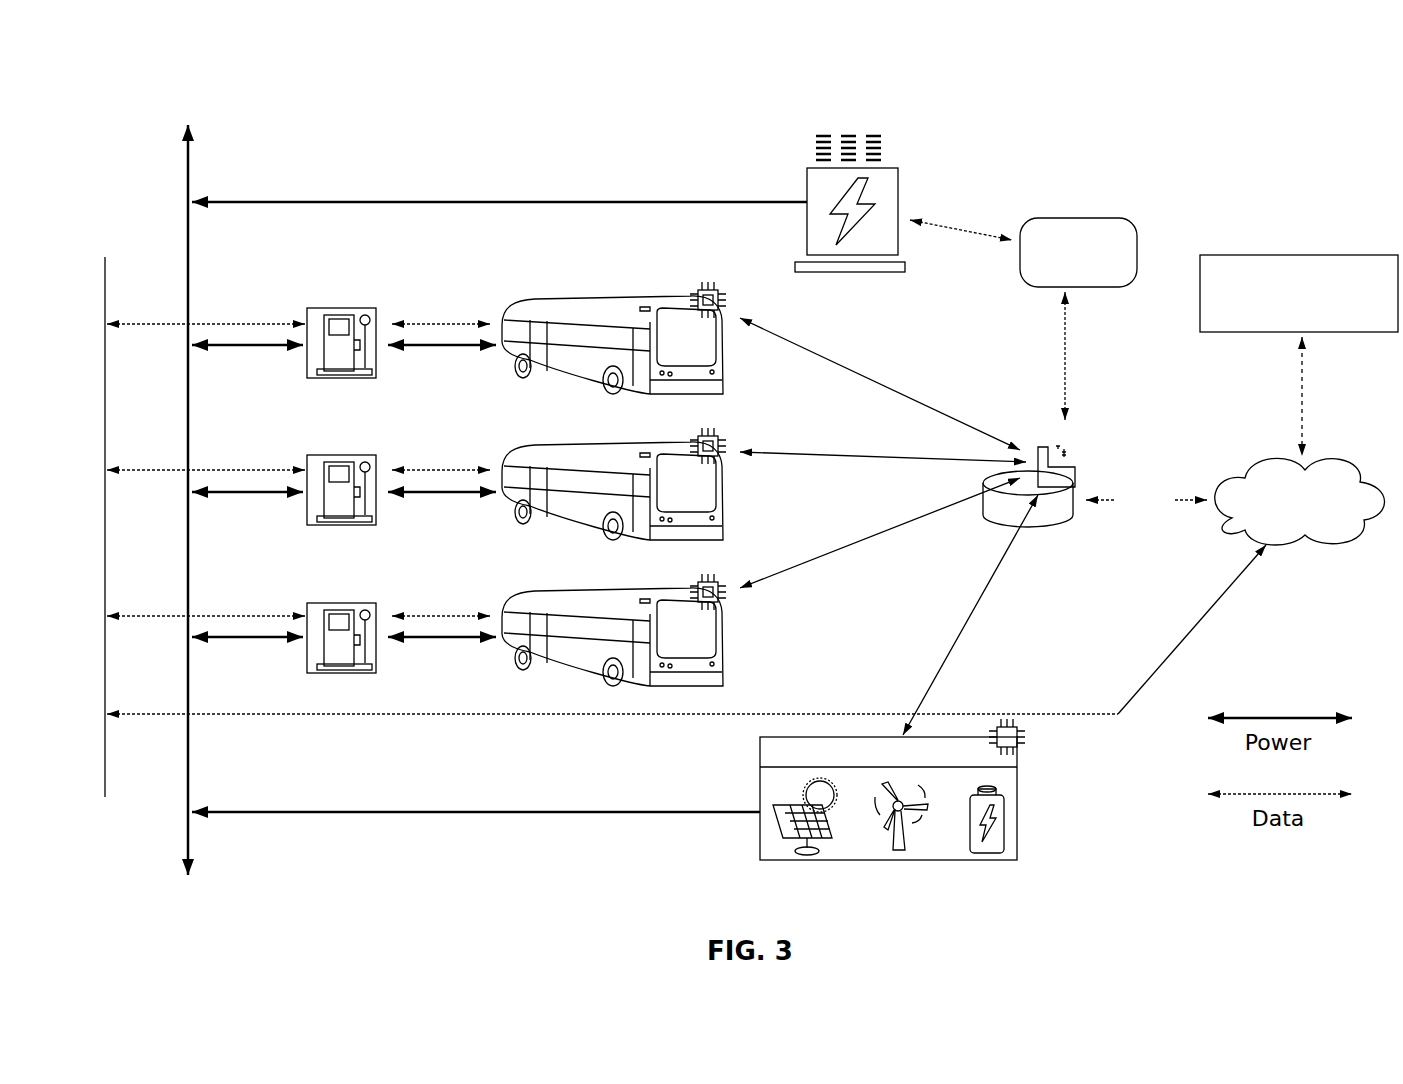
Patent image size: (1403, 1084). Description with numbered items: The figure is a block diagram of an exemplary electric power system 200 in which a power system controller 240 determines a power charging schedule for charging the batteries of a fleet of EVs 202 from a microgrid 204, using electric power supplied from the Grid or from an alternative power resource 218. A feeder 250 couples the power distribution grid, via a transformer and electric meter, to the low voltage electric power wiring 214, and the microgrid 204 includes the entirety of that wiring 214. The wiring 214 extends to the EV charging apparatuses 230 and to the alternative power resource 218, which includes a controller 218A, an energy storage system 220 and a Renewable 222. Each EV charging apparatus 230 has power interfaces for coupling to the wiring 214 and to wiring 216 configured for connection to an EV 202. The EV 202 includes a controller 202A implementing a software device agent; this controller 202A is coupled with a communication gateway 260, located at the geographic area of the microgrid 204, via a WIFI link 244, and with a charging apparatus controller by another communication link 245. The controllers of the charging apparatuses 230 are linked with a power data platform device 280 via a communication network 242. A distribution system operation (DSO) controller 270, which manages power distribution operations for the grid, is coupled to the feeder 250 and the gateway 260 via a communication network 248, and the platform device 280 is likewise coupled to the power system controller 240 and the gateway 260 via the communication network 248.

The electric power system 200 is at (773, 67).
The microgrid 204 is at (686, 140).
The electric power wiring 214 is at (514, 200).
The EV charging apparatus 230 is at (341, 308).
The communication link 245 is at (443, 306).
The wiring 216 is at (436, 350).
The EV 202 is at (585, 297).
The controller 202A is at (718, 288).
The WIFI link 244 is at (906, 393).
The feeder 250 is at (897, 168).
The communication network 248 is at (945, 228).
The distribution system operation (DSO) controller 270 is at (1080, 218).
The power system controller 240 is at (1302, 255).
The communication gateway 260 is at (1042, 535).
The power data platform device 280 is at (1310, 543).
The communication network 242 is at (572, 723).
The alternative power resource 218 is at (820, 737).
The controller 218A is at (1018, 745).
The Renewable 222 is at (805, 860).
The energy storage system 220 is at (983, 855).